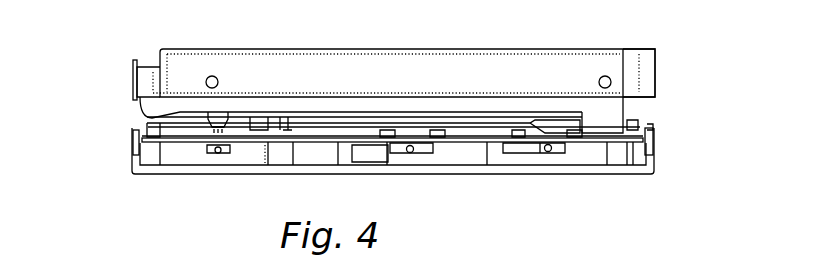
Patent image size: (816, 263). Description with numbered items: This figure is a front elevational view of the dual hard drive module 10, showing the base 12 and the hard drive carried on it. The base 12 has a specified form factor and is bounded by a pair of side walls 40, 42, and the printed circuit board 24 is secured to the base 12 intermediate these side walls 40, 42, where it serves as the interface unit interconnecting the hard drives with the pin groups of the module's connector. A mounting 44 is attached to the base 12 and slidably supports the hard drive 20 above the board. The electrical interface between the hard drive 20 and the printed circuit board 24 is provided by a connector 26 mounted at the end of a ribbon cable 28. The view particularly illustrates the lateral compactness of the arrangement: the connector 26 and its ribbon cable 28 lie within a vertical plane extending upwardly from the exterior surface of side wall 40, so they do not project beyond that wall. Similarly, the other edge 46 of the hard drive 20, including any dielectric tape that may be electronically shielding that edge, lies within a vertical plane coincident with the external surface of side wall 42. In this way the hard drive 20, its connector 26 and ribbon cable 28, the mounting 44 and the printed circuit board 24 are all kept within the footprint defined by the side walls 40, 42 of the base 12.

The dual hard drive module 10 is at (601, 219).
The base 12 is at (490, 173).
The hard drive 20 is at (285, 48).
The printed circuit board 24 is at (188, 143).
The connector 26 is at (133, 67).
The ribbon cable 28 is at (150, 117).
The side wall 40 is at (135, 150).
The side wall 42 is at (655, 145).
The mounting 44 is at (488, 108).
The edge 46 is at (656, 65).